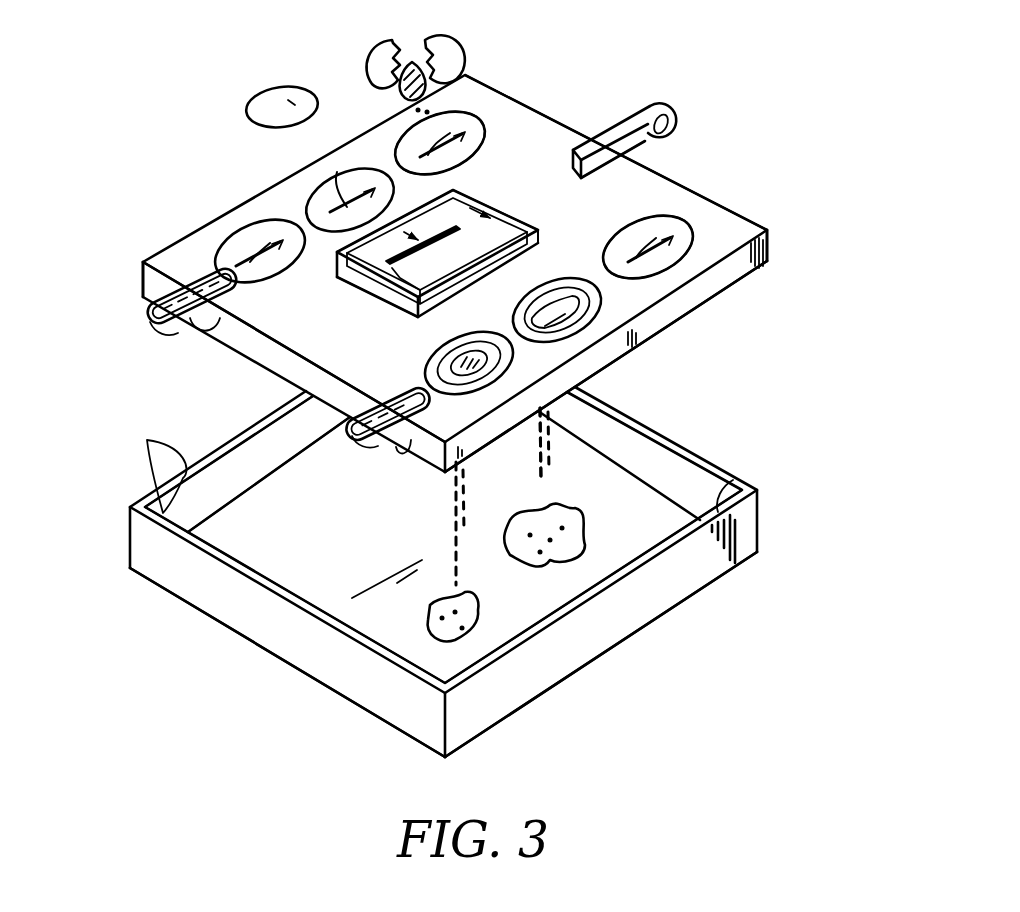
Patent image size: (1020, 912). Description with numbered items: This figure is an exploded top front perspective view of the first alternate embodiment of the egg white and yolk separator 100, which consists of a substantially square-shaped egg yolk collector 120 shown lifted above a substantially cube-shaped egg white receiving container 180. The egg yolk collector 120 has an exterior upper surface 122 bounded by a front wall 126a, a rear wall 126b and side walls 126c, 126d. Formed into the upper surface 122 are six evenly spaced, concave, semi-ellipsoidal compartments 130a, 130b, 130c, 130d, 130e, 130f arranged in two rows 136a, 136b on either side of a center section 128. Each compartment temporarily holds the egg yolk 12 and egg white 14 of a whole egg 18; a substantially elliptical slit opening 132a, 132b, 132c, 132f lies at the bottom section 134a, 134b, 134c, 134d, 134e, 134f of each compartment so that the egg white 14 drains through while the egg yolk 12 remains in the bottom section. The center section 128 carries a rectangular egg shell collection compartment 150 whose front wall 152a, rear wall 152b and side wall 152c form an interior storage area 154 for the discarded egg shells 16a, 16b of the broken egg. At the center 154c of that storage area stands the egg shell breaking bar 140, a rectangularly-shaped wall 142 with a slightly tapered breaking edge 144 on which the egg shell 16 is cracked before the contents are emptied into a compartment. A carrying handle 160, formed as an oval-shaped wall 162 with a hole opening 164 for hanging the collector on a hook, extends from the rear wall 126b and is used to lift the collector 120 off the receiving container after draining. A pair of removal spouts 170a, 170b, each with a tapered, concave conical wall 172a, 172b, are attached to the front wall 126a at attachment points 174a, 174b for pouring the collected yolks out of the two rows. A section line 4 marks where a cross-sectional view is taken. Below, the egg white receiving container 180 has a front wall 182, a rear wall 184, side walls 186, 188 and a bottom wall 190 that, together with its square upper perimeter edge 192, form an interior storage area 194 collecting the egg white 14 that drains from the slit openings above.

The egg white and yolk separator 100 is at (742, 110).
The egg yolk collector 120 is at (533, 103).
The upper surface 122 is at (533, 160).
The front wall 126a is at (267, 360).
The rear wall 126b is at (768, 233).
The side wall 126c is at (138, 272).
The side wall 126d is at (687, 297).
The center section 128 is at (540, 236).
The compartment 130a is at (258, 222).
The compartment 130b is at (340, 172).
The compartment 130c is at (446, 176).
The compartment 130d is at (466, 336).
The compartment 130e is at (537, 295).
The compartment 130f is at (667, 222).
The slit opening 132a is at (258, 246).
The slit opening 132b is at (340, 172).
The slit opening 132c is at (462, 128).
The slit opening 132f is at (687, 240).
The bottom section 134a is at (257, 276).
The bottom section 134b is at (352, 200).
The bottom section 134c is at (478, 126).
The bottom section 134d is at (450, 390).
The bottom section 134e is at (587, 298).
The bottom section 134f is at (633, 238).
The row 136a is at (487, 112).
The row 136b is at (687, 213).
The egg shell breaking bar 140 is at (472, 206).
The rectangularly-shaped wall 142 is at (385, 298).
The breaking edge 144 is at (414, 222).
The egg shell collection compartment 150 is at (364, 287).
The front wall 152a is at (370, 293).
The rear wall 152b is at (500, 212).
The side wall 152c is at (377, 233).
The interior storage area 154 is at (352, 267).
The center 154c is at (408, 314).
The carrying handle 160 is at (628, 116).
The oval-shaped wall 162 is at (645, 143).
The hole opening 164 is at (672, 107).
The removal spout 170a is at (143, 311).
The removal spout 170b is at (366, 452).
The conical wall 172a is at (147, 323).
The conical wall 172b is at (370, 407).
The attachment point 174a is at (213, 332).
The attachment point 174b is at (397, 450).
The egg white receiving container 180 is at (268, 654).
The front wall 182 is at (235, 595).
The rear wall 184 is at (710, 468).
The side wall 186 is at (237, 477).
The side wall 188 is at (633, 640).
The bottom wall 190 is at (403, 537).
The upper perimeter edge 192 is at (793, 466).
The interior storage area 194 is at (568, 487).
The section line 4- 4 is at (222, 127).
The egg yolk 12 is at (405, 84).
The egg white 14 is at (417, 67).
The egg shell 16 is at (265, 107).
The egg shell 16a is at (383, 58).
The egg shell 16b is at (462, 50).
The whole egg 18 is at (292, 103).